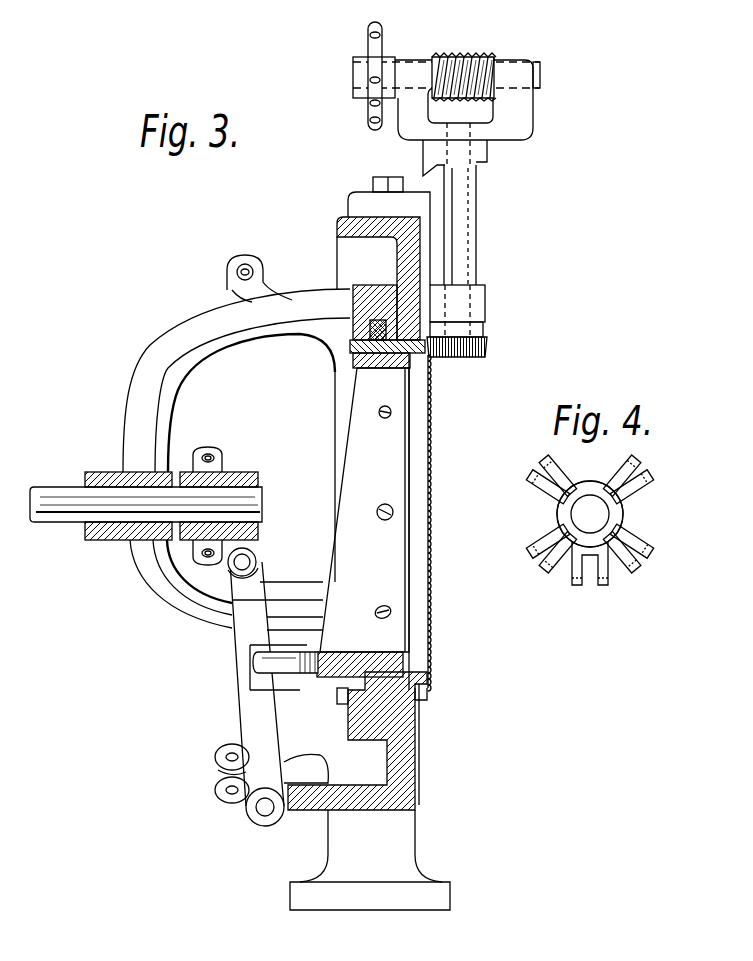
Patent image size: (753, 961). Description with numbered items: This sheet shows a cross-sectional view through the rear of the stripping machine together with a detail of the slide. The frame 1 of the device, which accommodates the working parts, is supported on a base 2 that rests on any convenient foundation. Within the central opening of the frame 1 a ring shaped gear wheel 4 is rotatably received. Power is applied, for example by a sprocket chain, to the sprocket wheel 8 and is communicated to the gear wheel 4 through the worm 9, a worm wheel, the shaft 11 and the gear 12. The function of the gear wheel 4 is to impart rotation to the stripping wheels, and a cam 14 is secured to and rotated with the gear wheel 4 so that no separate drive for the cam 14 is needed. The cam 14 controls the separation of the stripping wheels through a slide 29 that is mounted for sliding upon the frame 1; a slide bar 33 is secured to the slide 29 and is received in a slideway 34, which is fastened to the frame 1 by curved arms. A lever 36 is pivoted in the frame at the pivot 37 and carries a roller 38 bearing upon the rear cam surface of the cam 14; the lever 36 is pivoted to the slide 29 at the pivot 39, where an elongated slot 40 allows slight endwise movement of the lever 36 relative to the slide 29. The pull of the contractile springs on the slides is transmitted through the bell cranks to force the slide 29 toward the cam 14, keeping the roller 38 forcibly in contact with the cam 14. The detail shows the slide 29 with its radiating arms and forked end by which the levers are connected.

In FIG. 3, the frame 1 is at (393, 715).
In FIG. 3, the base 2 is at (370, 860).
In FIG. 3, the ring shaped gear wheel 4 is at (418, 527).
In FIG. 3, the sprocket wheel 8 is at (382, 40).
In FIG. 3, the worm 9 is at (470, 55).
In FIG. 3, the shaft 11 is at (474, 228).
In FIG. 3, the gear 12 is at (488, 348).
In FIG. 3, the cam 14 is at (364, 510).
In FIG. 3, the slide 29 is at (243, 477).
In FIG. 4, the slide 29 is at (615, 515).
In FIG. 3, the slide bar 33 is at (146, 504).
In FIG. 3, the slideway 34 is at (97, 540).
In FIG. 3, the lever 36 is at (253, 705).
In FIG. 3, the pivot 37 is at (264, 812).
In FIG. 3, the roller 38 is at (308, 652).
In FIG. 3, the pivot 39 is at (252, 559).
In FIG. 3, the elongated slot 40 is at (250, 574).